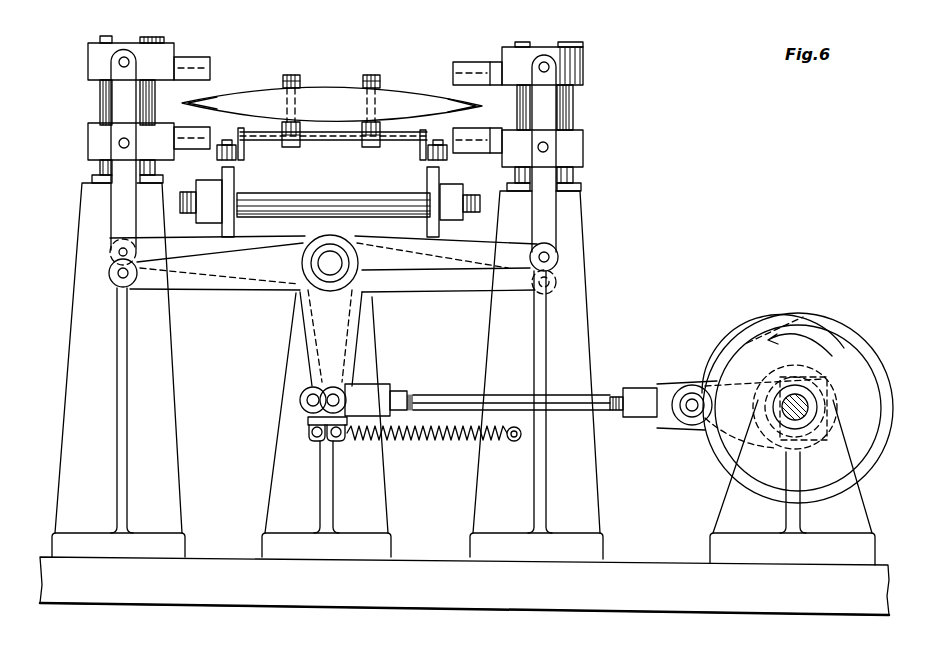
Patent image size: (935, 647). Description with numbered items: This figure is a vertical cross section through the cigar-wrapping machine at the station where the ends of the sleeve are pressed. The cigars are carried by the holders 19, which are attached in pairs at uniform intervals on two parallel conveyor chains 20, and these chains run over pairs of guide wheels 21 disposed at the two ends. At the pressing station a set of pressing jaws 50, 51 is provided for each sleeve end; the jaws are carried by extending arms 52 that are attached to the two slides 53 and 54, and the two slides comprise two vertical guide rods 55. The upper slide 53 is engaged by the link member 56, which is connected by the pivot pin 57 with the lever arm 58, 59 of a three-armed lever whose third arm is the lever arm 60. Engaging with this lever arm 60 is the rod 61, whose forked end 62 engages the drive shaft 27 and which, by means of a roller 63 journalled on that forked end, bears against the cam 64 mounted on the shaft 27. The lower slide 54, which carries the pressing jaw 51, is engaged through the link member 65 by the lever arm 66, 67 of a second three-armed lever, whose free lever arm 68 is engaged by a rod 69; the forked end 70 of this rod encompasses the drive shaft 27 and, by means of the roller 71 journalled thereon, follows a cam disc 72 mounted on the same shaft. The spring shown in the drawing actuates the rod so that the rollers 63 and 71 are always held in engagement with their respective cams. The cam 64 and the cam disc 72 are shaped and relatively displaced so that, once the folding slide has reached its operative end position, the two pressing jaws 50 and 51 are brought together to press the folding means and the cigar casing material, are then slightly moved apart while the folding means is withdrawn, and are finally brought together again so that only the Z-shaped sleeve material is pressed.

The holders 19 is at (296, 77).
The conveyor chains 20 is at (243, 153).
The guide wheels 21 is at (237, 175).
The drive shaft 27 is at (822, 427).
The pressing jaw 50 is at (193, 77).
The pressing jaw 51 is at (190, 128).
The extending arms 52 is at (181, 60).
The upper slide 53 is at (100, 48).
The lower slide 54 is at (102, 137).
The vertical guide rods 55 is at (520, 105).
The link member 56 is at (125, 92).
The pivot pin 57 is at (108, 275).
The lever arm 58 is at (426, 244).
The lever arm 59 is at (242, 282).
The lever arm 60 is at (332, 366).
The rod 61 is at (393, 387).
The forked end 62 is at (823, 382).
The roller 63 is at (705, 417).
The cam 64 is at (747, 330).
The link member 65 is at (120, 193).
The lever arm 66 is at (470, 287).
The lever arm 67 is at (240, 243).
The free lever arm 68 is at (306, 345).
The rod 69 is at (300, 397).
The forked end 70 is at (765, 435).
The roller 71 is at (673, 397).
The cam disc 72 is at (722, 453).